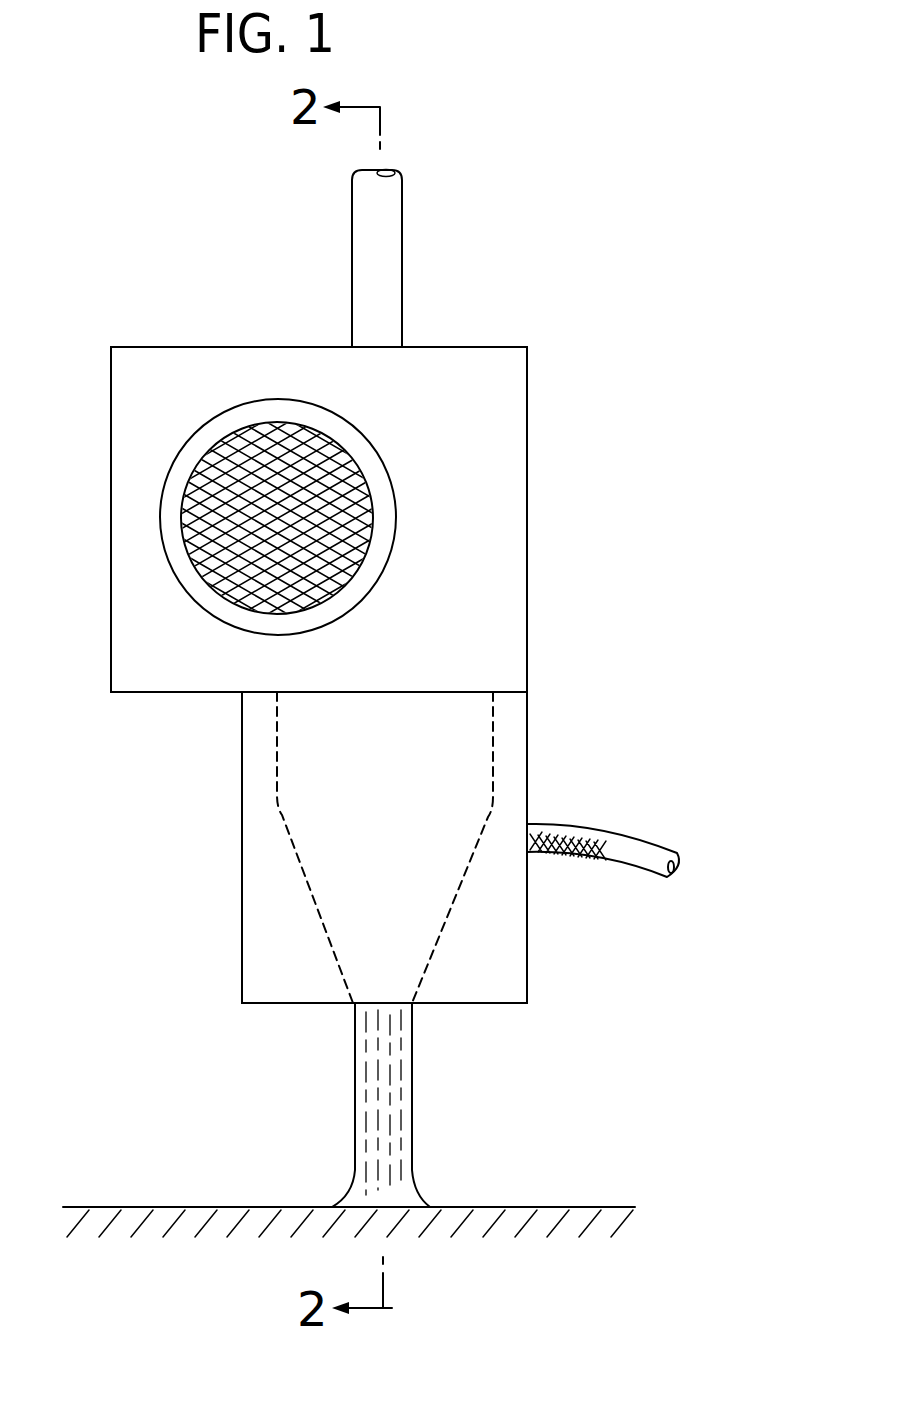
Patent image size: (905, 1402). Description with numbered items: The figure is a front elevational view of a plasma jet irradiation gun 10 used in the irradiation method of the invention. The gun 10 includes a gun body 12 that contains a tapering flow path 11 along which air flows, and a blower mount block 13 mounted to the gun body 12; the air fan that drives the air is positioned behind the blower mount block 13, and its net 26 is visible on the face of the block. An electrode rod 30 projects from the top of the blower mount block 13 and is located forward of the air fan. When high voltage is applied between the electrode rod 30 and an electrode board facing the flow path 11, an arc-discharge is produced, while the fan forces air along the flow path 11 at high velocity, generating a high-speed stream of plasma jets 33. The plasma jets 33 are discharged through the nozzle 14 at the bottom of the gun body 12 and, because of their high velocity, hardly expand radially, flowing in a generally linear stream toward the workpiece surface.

The plasma jet irradiation gun 10 is at (628, 511).
The tapering flow path 11 is at (308, 871).
The gun body 12 is at (527, 945).
The blower mount block 13 is at (111, 575).
The nozzle 14 is at (348, 1003).
The net 26 is at (190, 483).
The electrode rod 30 is at (402, 237).
The plasma jets 33 is at (412, 1098).